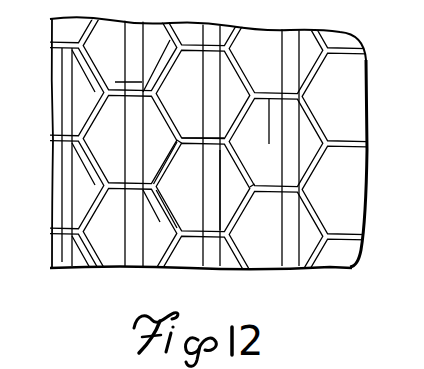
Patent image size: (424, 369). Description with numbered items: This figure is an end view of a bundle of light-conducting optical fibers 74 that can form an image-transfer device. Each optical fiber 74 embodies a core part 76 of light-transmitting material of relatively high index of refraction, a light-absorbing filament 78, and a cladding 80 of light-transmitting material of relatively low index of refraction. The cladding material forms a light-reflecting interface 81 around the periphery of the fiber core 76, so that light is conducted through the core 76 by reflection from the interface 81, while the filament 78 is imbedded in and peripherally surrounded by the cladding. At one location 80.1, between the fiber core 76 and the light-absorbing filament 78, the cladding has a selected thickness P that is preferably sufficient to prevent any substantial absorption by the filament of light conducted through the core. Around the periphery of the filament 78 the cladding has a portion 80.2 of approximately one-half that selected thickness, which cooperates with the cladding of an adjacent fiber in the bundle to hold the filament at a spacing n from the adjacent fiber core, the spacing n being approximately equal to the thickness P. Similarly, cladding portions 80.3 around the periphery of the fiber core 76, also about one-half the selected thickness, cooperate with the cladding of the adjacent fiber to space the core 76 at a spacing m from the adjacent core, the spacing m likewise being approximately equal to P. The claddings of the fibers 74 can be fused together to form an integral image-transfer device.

The optical fiber 74 is at (107, 242).
The core part 76 is at (170, 163).
The light-absorbing filament 78 is at (220, 184).
The cladding 80 is at (207, 197).
The cladding location 80.1 is at (207, 164).
The cladding portion 80.2 is at (254, 191).
The cladding portion 80.3 is at (184, 138).
The light-reflecting interface 81 is at (172, 209).
The spacing m is at (269, 144).
The selected thickness P is at (258, 158).
The spacing n is at (307, 227).